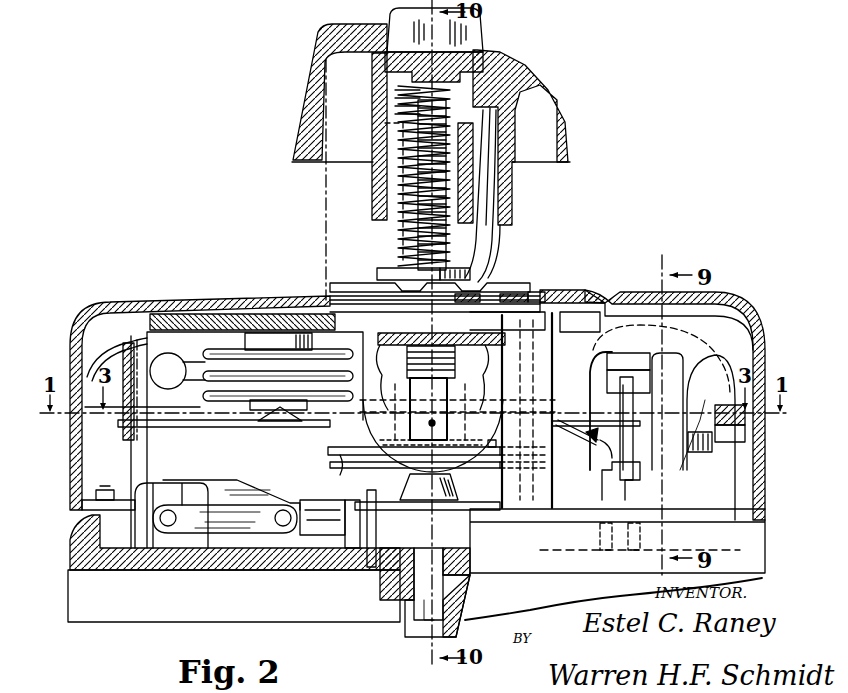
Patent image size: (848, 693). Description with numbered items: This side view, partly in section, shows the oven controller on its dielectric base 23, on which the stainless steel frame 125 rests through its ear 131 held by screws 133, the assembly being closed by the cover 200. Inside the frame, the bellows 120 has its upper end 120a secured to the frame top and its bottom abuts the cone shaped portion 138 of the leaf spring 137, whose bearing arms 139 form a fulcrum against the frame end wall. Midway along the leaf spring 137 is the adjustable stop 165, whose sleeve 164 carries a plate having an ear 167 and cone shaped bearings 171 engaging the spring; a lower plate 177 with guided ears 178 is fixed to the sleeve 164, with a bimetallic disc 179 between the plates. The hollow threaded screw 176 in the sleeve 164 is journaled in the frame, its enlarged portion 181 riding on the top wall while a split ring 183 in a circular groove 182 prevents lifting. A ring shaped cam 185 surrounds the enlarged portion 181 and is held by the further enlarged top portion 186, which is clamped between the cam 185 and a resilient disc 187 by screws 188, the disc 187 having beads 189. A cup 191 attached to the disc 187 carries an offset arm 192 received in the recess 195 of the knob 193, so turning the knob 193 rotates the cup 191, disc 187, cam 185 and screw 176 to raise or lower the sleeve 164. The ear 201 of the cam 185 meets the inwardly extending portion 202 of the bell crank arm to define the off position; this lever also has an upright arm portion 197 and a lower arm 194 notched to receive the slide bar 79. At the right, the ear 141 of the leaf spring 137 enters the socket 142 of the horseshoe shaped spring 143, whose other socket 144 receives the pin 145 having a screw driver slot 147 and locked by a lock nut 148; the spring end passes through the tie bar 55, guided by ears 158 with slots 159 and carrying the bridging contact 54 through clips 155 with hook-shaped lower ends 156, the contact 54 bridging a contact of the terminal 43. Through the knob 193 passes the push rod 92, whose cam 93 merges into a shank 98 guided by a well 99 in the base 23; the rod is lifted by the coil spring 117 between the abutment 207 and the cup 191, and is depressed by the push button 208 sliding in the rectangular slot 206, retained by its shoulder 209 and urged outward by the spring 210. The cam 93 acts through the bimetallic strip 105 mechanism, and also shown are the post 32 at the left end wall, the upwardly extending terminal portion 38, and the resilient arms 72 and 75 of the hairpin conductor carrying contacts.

The rectangular slot 206 is at (366, 70).
The push button 208 is at (470, 24).
The abutment 207 is at (483, 44).
The shoulder 209 is at (392, 80).
The knob 193 is at (518, 82).
The spring 210 is at (395, 104).
The offset arm 192 is at (483, 122).
The coil spring 117 is at (478, 150).
The cup 191 is at (480, 183).
The offset recess portion 195 is at (486, 206).
The push rod 92 is at (448, 212).
The beads 189 is at (400, 276).
The enlarged top portion 186 is at (384, 272).
The screws 188 is at (486, 262).
The resilient disc 187 is at (490, 283).
The ring shaped cam 185 is at (522, 290).
The enlarged portion 181 is at (370, 306).
The ear 201 is at (537, 293).
The inwardly extending portion 202 is at (566, 299).
The frame 125 is at (578, 330).
The cover 200 is at (720, 308).
The upper end of bellows 120a is at (260, 338).
The bellows 120 is at (216, 396).
The bearing arms 139 is at (142, 432).
The leaf spring 137 is at (203, 424).
The cone shaped portion 138 is at (276, 418).
The split ring 183 is at (400, 358).
The circular groove 182 is at (488, 346).
The hollow threaded screw 176 is at (458, 355).
The sleeve 164 is at (397, 410).
The ear 167 is at (448, 432).
The cone shaped bearings 171 is at (433, 423).
The adjustable stop 165 is at (496, 442).
The upright arm portion 197 is at (543, 488).
The plate 177 is at (330, 464).
The ears 178 is at (395, 473).
The bimetallic disc 179 is at (344, 454).
The cam 93 is at (408, 488).
The lower arm 194 is at (458, 508).
The slide bar 79 is at (376, 518).
The post 32 is at (171, 494).
The resilient arm 72 is at (214, 508).
The bimetallic strip 105 is at (254, 490).
The upwardly extending portion 38 is at (302, 507).
The resilient arm 75 is at (330, 510).
The screws 133 is at (101, 490).
The ear 131 is at (82, 505).
The base 23 is at (68, 586).
The shank 98 is at (474, 572).
The well 99 is at (444, 592).
The terminal 43 is at (605, 522).
The horseshoe shaped leaf spring 143 is at (590, 400).
The slots 159 is at (612, 360).
The ears 158 is at (607, 384).
The clips 155 is at (645, 408).
The tie bar 55 is at (624, 402).
The ear 141 is at (585, 440).
The bridging contact 54 is at (596, 437).
The socket 142 is at (600, 455).
The hook-shaped lower end 156 is at (605, 478).
The socket 144 is at (690, 450).
The pin 145 is at (707, 456).
The screw driver slot 147 is at (746, 428).
The lock nut 148 is at (735, 440).